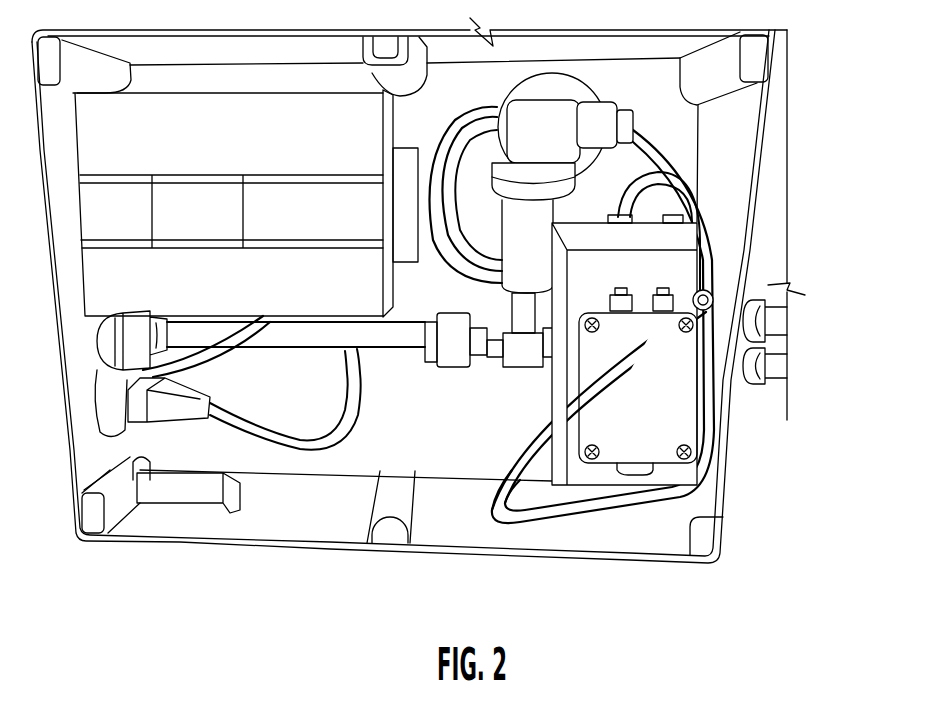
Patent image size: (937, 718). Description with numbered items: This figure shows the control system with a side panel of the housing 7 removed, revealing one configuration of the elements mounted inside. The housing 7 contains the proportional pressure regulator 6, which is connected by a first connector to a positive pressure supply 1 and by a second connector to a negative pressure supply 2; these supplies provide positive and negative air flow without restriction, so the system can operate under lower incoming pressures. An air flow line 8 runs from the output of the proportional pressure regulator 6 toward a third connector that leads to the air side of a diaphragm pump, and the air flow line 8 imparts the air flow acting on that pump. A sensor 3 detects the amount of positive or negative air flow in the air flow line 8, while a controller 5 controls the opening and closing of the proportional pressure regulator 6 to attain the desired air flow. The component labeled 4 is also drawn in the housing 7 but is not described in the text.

The positive pressure supply 1 is at (777, 313).
The negative pressure supply 2 is at (777, 362).
The sensor 3 is at (527, 237).
The hose fitting and cable 4 is at (122, 345).
The controller 5 is at (330, 143).
The proportional pressure regulator 6 is at (667, 377).
The housing 7 is at (748, 153).
The air flow line 8 is at (355, 340).